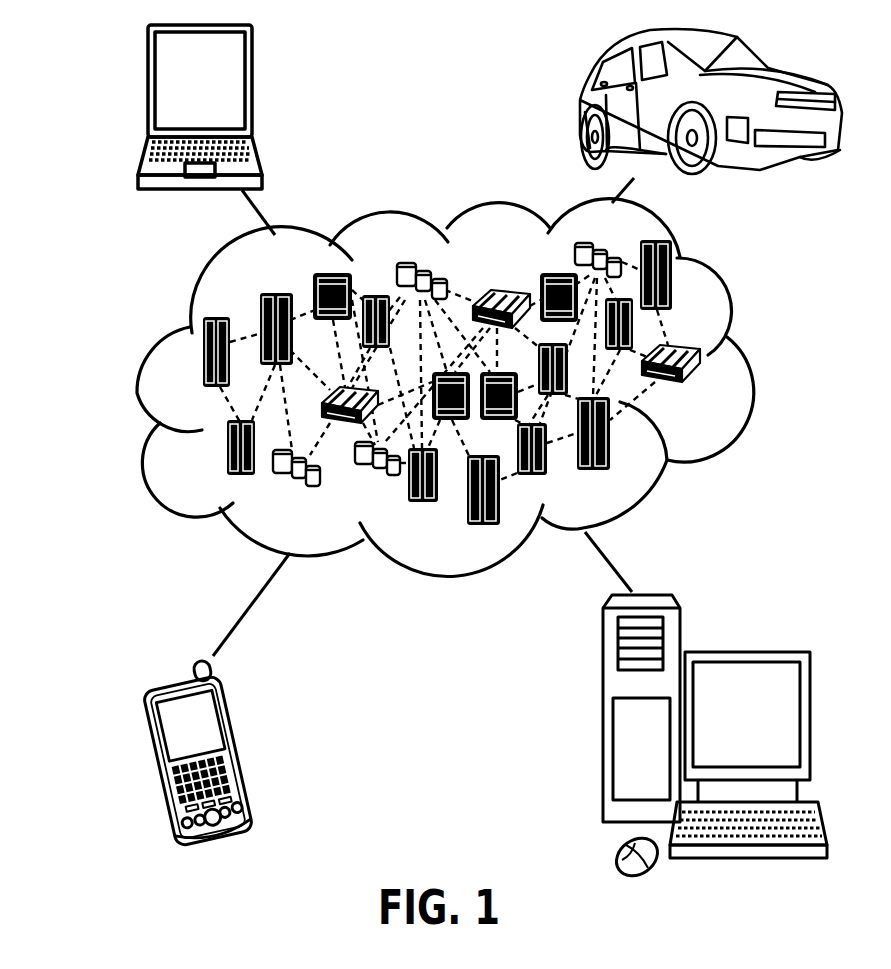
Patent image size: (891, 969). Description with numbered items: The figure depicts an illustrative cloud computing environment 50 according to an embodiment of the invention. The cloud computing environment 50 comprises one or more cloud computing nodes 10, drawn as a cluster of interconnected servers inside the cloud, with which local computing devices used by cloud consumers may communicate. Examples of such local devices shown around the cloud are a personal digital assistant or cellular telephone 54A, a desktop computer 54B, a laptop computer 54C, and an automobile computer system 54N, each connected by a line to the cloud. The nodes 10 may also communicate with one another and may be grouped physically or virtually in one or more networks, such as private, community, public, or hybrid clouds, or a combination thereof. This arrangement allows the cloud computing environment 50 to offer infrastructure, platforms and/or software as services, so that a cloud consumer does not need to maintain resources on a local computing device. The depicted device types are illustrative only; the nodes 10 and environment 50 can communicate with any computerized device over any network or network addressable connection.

The cloud computing nodes 10 is at (704, 393).
The cloud computing environment 50 is at (746, 357).
The personal digital assistant or cellular telephone 54A is at (245, 747).
The desktop computer 54B is at (744, 651).
The laptop computer 54C is at (252, 89).
The automobile computer system 54N is at (580, 102).